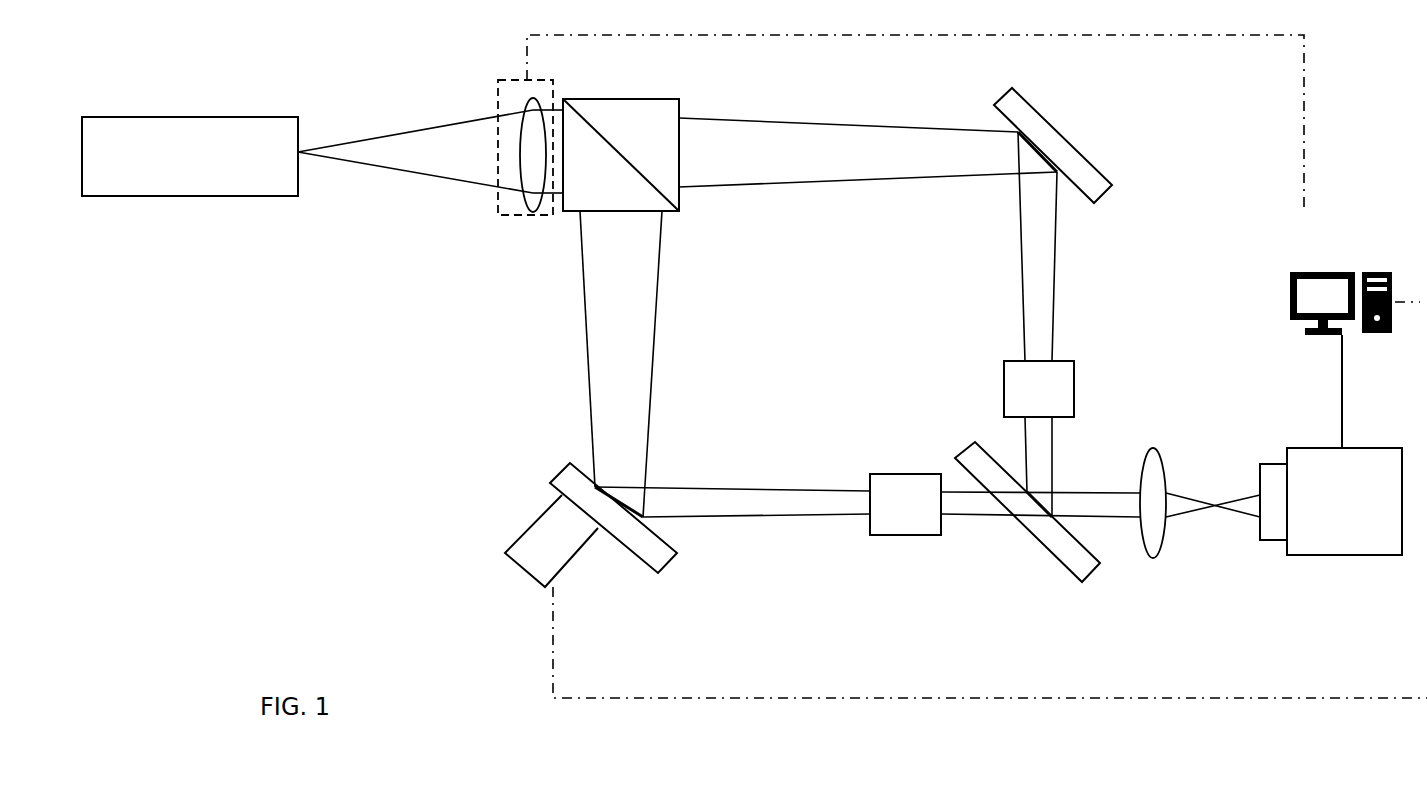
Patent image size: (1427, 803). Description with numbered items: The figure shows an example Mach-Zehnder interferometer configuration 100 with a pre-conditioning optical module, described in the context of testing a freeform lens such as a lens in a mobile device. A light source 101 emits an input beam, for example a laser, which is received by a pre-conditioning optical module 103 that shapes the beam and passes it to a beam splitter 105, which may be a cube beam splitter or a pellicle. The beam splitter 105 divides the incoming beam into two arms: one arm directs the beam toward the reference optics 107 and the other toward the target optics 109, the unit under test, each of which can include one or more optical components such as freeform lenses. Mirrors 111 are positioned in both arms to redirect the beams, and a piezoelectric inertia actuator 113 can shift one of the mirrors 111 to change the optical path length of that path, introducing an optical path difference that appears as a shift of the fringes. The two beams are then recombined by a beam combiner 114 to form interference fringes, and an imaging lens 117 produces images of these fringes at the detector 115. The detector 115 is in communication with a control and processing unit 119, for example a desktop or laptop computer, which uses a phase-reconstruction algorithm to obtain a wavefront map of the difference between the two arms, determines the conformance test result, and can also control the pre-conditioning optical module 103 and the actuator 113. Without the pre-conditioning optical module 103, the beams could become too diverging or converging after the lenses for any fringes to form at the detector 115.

The Mach-Zehnder interferometer configuration 100 is at (174, 78).
The light source 101 is at (203, 197).
The pre-conditioning optical module 103 is at (512, 218).
The beam splitter 105 is at (645, 102).
The reference optics 107 is at (910, 536).
The target optics 109 is at (1068, 403).
The mirrors 111 is at (1078, 140).
The piezoelectric inertia actuator 113 is at (535, 528).
The beam combiner 114 is at (1075, 558).
The detector 115 is at (1340, 562).
The imaging lens 117 is at (1169, 556).
The control and processing unit 119 is at (1343, 262).